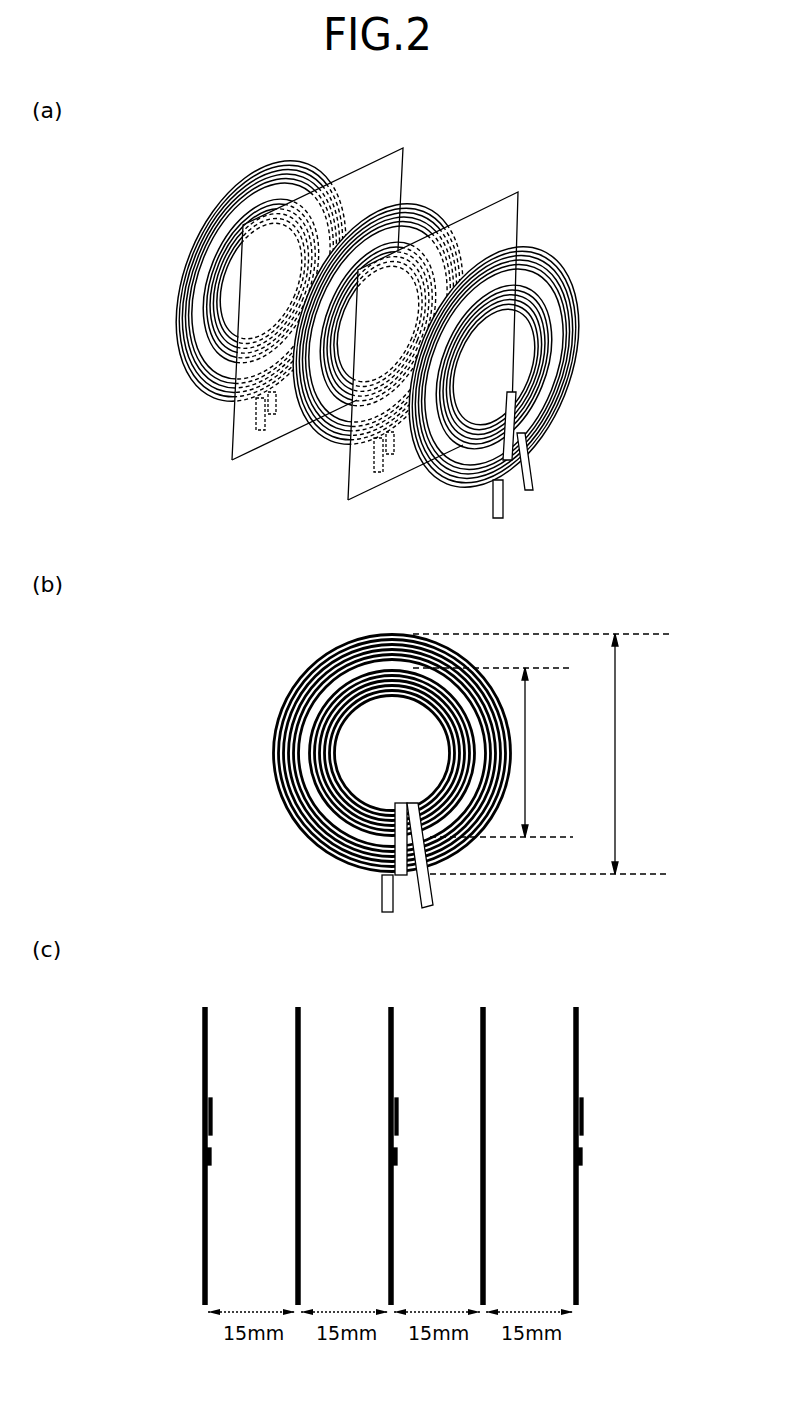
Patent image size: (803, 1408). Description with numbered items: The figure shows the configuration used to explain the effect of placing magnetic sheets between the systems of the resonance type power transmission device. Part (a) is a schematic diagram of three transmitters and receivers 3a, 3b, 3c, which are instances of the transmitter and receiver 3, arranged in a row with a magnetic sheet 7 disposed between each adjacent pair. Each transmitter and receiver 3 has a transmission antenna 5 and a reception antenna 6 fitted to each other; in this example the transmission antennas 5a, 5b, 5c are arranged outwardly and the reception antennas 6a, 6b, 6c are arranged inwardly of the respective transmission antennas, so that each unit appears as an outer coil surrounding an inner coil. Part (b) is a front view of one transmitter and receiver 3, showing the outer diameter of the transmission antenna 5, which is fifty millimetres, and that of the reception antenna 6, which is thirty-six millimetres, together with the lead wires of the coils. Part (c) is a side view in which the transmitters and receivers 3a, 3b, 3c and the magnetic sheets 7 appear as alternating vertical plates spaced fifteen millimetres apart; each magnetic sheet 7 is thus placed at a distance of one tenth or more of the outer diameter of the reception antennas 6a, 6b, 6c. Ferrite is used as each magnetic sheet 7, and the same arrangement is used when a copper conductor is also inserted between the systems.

The transmitter and receiver 3 is at (414, 773).
The transmitter and receiver 3a is at (241, 706).
The transmitter and receiver 3b is at (405, 701).
The transmitter and receiver 3c is at (533, 763).
The transmission antenna 5 is at (282, 708).
The transmission antenna 5a is at (247, 185).
The transmission antenna 5b is at (412, 205).
The transmission antenna 5c is at (578, 298).
The reception antenna 6 is at (322, 753).
The reception antenna 6a is at (245, 281).
The reception antenna 6b is at (410, 242).
The reception antenna 6c is at (647, 278).
The magnetic sheet 7 is at (373, 162).